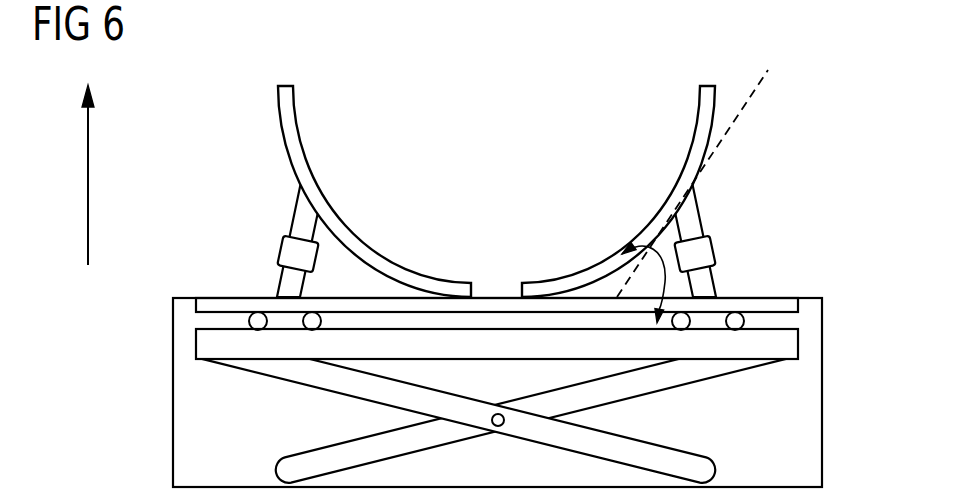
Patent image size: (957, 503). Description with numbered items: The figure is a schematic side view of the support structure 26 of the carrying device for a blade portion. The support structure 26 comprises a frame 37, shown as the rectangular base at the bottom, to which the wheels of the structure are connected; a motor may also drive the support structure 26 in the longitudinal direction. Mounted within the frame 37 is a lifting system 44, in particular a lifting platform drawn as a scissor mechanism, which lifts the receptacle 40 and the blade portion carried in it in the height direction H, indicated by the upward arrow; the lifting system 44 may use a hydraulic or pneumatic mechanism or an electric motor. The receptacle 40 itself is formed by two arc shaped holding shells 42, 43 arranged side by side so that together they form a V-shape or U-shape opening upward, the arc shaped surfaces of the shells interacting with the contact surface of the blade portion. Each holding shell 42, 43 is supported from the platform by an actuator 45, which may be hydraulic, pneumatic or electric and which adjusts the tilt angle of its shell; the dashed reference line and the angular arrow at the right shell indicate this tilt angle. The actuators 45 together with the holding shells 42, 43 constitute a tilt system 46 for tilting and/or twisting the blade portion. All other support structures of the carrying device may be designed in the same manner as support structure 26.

The support structure 26 is at (800, 117).
The frame 37 is at (822, 400).
The receptacle 40 is at (490, 212).
The holding shell 42 is at (327, 190).
The holding shell 43 is at (597, 258).
The lifting system 44 is at (172, 345).
The actuator 45 is at (282, 254).
The tilt system 46 is at (261, 158).
The height direction H is at (88, 173).